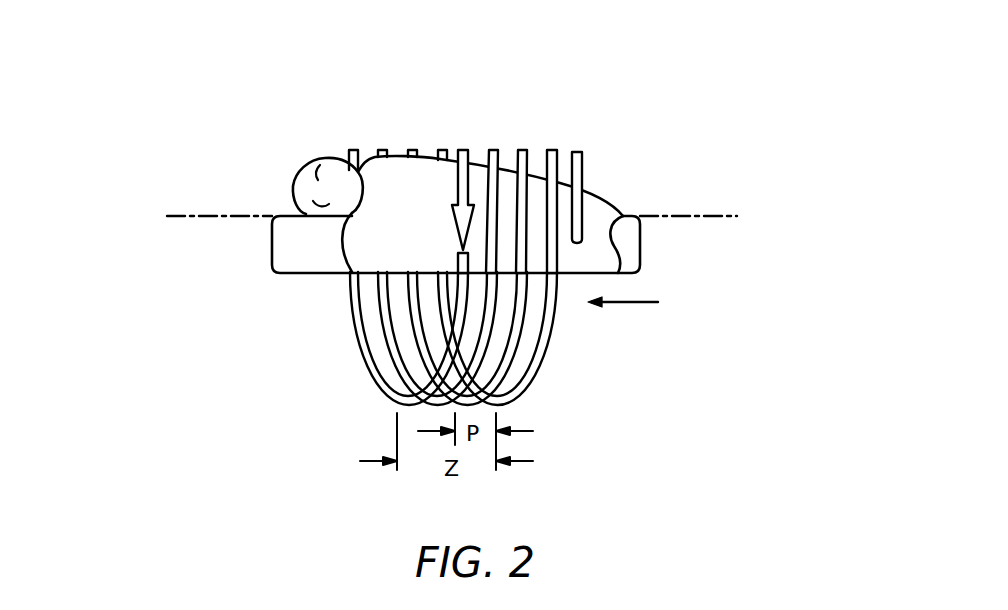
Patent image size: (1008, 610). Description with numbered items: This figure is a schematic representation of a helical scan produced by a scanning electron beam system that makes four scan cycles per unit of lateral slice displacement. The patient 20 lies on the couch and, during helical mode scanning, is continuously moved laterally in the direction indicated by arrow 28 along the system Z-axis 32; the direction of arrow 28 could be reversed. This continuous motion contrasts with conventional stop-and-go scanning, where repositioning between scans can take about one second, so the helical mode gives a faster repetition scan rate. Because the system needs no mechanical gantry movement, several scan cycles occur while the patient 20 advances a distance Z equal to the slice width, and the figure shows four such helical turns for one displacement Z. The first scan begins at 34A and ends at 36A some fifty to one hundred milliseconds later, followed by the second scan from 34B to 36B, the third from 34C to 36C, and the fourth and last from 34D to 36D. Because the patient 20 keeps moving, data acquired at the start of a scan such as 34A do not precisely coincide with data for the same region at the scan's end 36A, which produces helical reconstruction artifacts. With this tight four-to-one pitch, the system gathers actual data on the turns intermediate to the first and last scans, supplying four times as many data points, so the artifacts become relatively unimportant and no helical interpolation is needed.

The patient 20 is at (304, 155).
The arrow 28 is at (638, 305).
The Z-axis 32 is at (695, 216).
The start of first scan 34A is at (462, 150).
The start of second scan 34B is at (491, 150).
The start of third scan 34C is at (522, 150).
The start of fourth scan 34D is at (553, 150).
The end of first scan 36A is at (353, 150).
The end of second scan 36B is at (385, 150).
The end of third scan 36C is at (413, 150).
The end of fourth scan 36D is at (442, 150).